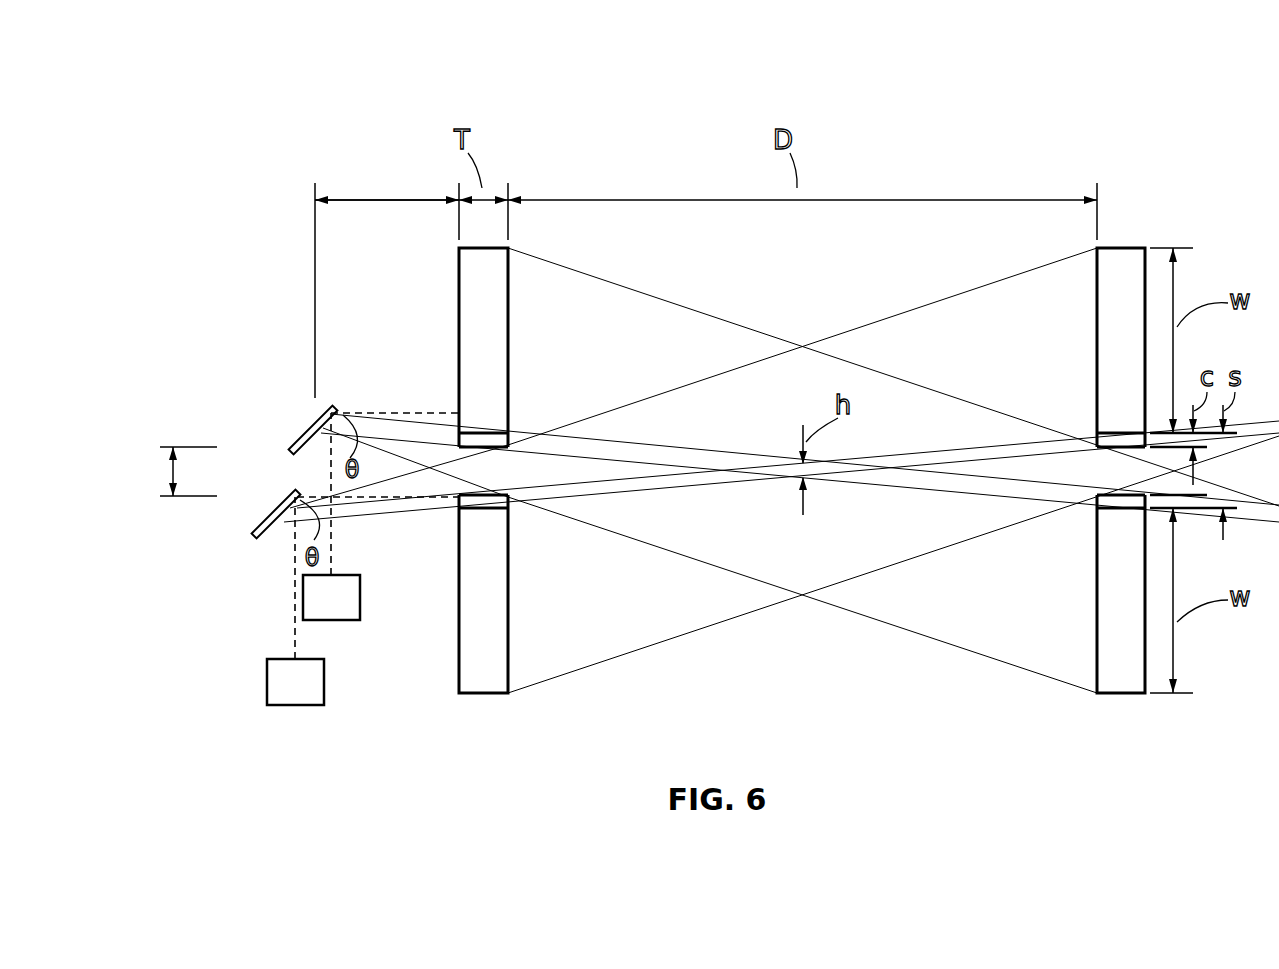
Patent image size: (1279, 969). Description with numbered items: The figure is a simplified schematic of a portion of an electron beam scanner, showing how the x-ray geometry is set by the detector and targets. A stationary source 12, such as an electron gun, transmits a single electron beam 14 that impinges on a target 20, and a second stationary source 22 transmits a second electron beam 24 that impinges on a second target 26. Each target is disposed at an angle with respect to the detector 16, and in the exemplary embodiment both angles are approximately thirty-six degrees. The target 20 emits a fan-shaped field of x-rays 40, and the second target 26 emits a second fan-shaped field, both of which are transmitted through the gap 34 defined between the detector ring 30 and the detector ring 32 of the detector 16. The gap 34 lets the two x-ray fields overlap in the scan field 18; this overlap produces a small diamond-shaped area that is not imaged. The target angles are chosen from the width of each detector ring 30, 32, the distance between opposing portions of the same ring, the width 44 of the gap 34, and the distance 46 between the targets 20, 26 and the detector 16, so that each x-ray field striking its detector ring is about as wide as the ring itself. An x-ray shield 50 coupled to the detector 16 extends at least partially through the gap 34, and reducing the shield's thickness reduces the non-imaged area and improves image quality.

The stationary source 12 is at (361, 600).
The electron beam 14 is at (336, 522).
The detector 16 is at (481, 110).
The scan field 18 is at (718, 427).
The target 20 is at (311, 413).
The second stationary source 22 is at (267, 683).
The second electron beam 24 is at (292, 592).
The second target 26 is at (278, 493).
The detector ring 30 is at (487, 683).
The detector ring 32 is at (466, 283).
The gap 34 is at (504, 470).
The field of x-rays 40 is at (718, 536).
The width of the gap 44 is at (163, 447).
The distance between the targets 46 is at (393, 188).
The x-ray shield 50 is at (1104, 437).